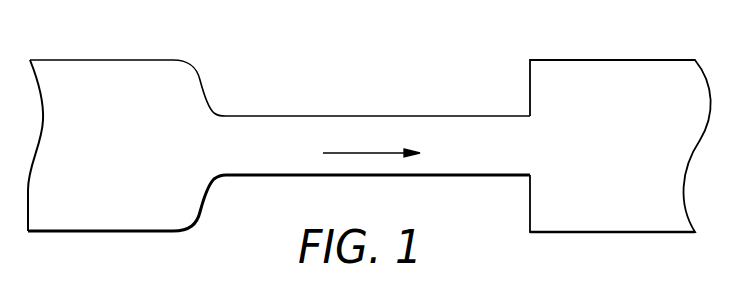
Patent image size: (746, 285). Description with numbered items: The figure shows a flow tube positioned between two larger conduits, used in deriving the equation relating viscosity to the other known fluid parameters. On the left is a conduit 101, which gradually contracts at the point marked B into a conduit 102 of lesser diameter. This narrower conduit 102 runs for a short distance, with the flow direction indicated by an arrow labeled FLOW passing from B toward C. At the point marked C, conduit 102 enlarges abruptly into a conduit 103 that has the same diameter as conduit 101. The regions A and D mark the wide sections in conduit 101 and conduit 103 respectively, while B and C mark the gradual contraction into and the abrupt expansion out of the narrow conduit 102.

The conduit 101 is at (137, 78).
The conduit of lesser diameter 102 is at (295, 135).
The conduit 103 is at (595, 97).